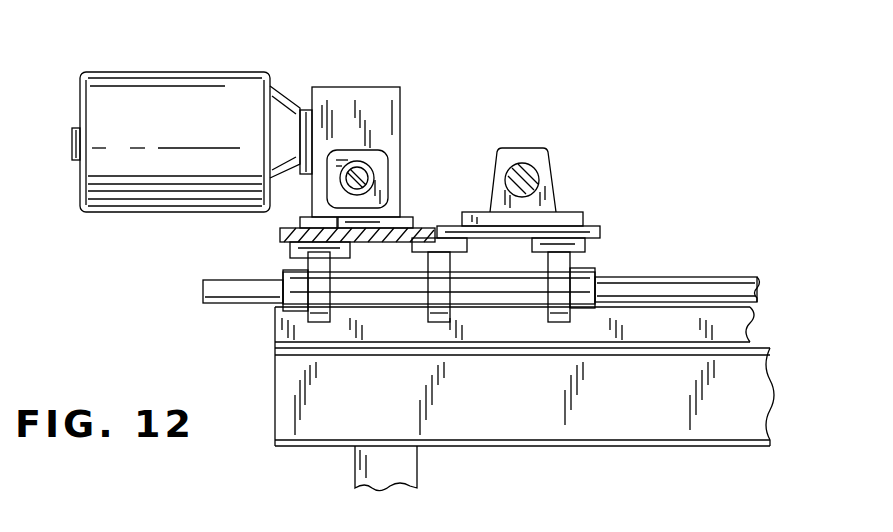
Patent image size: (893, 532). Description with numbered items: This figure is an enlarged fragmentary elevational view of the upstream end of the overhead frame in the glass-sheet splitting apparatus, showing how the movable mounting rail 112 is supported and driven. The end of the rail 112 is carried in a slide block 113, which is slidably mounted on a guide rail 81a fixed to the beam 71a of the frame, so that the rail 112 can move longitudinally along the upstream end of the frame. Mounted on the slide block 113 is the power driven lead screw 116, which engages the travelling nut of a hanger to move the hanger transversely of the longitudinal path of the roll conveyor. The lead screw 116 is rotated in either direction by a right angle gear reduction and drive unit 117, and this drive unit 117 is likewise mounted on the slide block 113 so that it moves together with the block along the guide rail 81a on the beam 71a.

The right angle gear reduction and drive unit 117 is at (216, 70).
The power driven lead screw 116 is at (368, 176).
The mounting rail 112 is at (522, 172).
The slide block 113 is at (601, 228).
The guide rail 81a is at (686, 283).
The beam 71a is at (533, 437).